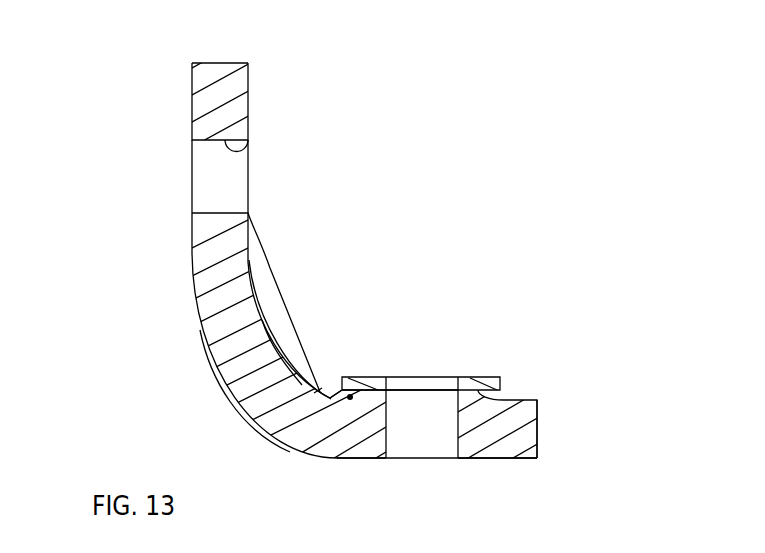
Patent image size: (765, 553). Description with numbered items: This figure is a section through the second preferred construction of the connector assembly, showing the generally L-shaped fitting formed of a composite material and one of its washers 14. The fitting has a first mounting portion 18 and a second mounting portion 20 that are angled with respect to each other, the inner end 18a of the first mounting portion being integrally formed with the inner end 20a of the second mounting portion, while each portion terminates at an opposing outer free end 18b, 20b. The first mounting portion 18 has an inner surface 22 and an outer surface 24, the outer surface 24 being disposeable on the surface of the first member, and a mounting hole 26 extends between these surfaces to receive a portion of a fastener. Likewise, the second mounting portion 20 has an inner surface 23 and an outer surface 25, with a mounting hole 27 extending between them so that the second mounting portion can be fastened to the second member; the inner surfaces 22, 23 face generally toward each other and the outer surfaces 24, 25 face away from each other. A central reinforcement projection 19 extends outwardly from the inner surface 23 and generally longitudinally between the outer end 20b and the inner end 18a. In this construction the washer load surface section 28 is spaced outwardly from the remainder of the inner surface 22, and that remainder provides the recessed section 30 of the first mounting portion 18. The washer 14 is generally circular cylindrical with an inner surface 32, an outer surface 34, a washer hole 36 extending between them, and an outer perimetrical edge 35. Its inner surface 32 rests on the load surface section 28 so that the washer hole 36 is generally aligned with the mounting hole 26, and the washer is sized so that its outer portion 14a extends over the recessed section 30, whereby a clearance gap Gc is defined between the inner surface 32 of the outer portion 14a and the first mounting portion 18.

The second mounting portion 20 is at (152, 115).
The inner end of second mounting portion 20a is at (240, 370).
The outer free end of second mounting portion 20b is at (213, 61).
The inner surface of second mounting portion 23 is at (251, 95).
The mounting hole of second mounting portion 27 is at (247, 148).
The outer surface of second mounting portion 25 is at (190, 245).
The central reinforcement projection 19 is at (268, 293).
The recessed section 30 is at (320, 383).
The inner end of first mounting portion 18a is at (246, 389).
The outer perimetrical edge 35 is at (334, 397).
The washer 14 is at (366, 353).
The outer portion of washer 14a is at (352, 380).
The washer hole 36 is at (458, 381).
The washer load surface section 28 is at (376, 395).
The inner surface of washer 32 is at (493, 398).
The inner surface of first mounting portion 22 is at (526, 398).
The outer surface of washer 34 is at (520, 419).
The outer free end of first mounting portion 18b is at (535, 443).
The first mounting portion 18 is at (536, 483).
The mounting hole 26 is at (387, 442).
The outer surface of first mounting portion 24 is at (350, 463).
The clearance gap Gc is at (349, 398).